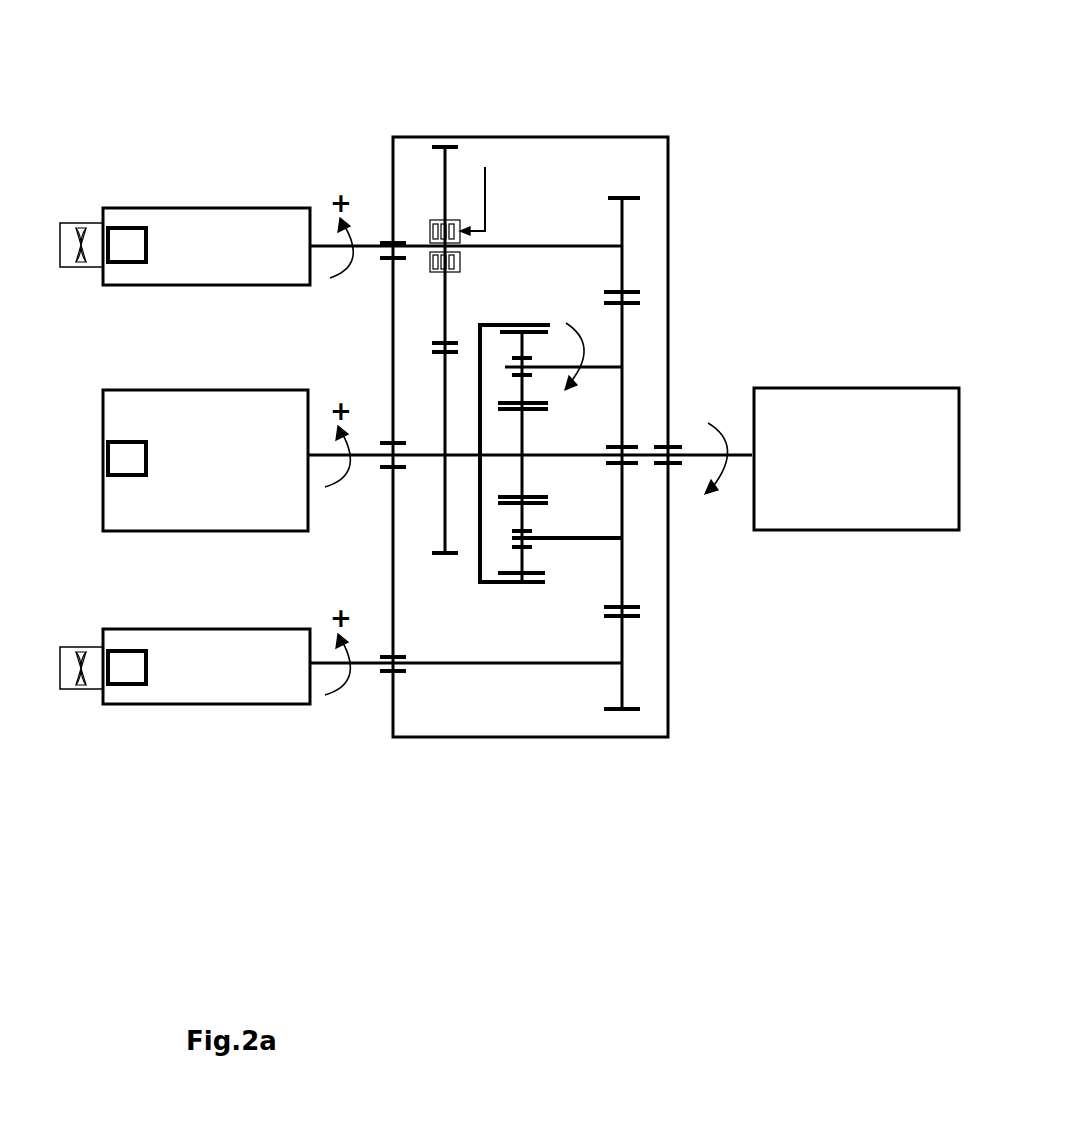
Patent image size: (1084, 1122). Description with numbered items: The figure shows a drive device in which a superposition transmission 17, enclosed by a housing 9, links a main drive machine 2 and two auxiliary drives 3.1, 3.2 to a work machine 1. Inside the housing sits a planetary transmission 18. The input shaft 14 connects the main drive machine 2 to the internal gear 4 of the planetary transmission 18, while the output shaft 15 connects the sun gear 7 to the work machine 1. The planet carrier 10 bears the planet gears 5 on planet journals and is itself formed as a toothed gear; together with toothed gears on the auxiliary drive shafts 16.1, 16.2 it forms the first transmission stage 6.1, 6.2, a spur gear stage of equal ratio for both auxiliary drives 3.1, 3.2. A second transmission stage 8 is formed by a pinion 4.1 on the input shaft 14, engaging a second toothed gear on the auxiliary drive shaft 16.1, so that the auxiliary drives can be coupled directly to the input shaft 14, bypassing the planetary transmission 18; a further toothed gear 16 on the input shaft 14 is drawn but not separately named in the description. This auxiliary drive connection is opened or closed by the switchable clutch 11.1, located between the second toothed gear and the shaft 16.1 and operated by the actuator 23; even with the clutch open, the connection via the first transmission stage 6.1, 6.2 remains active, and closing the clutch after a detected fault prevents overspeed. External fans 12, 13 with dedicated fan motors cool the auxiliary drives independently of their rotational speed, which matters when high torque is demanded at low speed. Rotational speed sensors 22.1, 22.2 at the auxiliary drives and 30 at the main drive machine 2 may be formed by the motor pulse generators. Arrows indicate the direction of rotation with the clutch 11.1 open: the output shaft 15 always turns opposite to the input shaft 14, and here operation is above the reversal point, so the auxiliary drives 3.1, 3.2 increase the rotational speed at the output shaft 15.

The work machine 1 is at (914, 388).
The main drive machine 2 is at (163, 390).
The first auxiliary drive 3.1 is at (202, 208).
The second auxiliary drive 3.2 is at (270, 705).
The internal gear 4 is at (445, 403).
The pinion 4.1 is at (480, 380).
The planet gears 5 is at (622, 652).
The first transmission stage 6.1 is at (622, 228).
The first transmission stage 6.2 is at (622, 682).
The sun gear 7 is at (525, 428).
The second transmission stage 8 is at (448, 160).
The housing 9 is at (642, 740).
The planet carrier 10 is at (627, 594).
The switchable clutch 11.1 is at (438, 218).
The external fan 12 is at (82, 222).
The external fan 13 is at (82, 690).
The input shaft 14 is at (342, 460).
The output shaft 15 is at (725, 458).
The main shaft gear 16 is at (393, 455).
The auxiliary drive shaft 16.1 is at (368, 242).
The auxiliary drive shaft 16.2 is at (342, 665).
The superposition transmission 17 is at (543, 752).
The planetary transmission 18 is at (495, 607).
The rotational speed sensor 22.1 is at (128, 228).
The rotational speed sensor 22.2 is at (124, 685).
The actuator 23 is at (486, 166).
The rotational speed sensor 30 is at (122, 445).